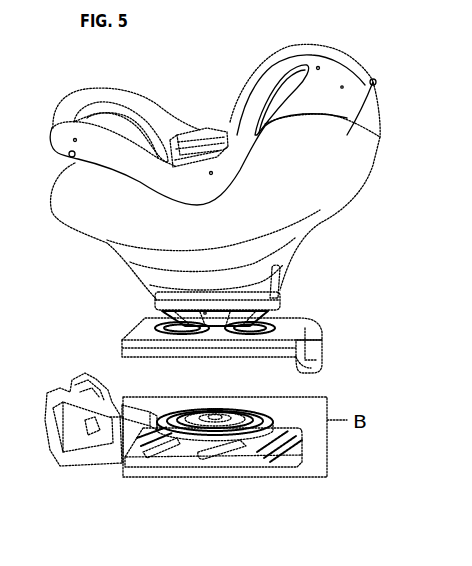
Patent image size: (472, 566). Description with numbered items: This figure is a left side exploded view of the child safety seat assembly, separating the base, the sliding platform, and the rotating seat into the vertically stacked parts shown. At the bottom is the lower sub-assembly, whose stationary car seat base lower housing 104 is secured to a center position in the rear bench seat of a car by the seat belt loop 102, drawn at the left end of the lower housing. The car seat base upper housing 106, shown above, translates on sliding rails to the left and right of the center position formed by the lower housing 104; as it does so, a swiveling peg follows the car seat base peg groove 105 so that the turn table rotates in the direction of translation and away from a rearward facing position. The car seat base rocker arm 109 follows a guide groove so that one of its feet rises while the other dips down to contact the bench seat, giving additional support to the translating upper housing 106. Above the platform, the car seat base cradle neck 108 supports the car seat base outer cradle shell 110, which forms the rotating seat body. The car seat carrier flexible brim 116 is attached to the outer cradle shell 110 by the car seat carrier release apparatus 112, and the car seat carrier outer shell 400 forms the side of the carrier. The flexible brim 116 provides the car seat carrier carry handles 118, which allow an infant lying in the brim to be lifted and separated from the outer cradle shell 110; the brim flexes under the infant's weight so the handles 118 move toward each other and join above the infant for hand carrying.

The seat belt loop 102 is at (72, 442).
The car seat base lower housing 104 is at (157, 460).
The car seat base peg groove 105 is at (210, 458).
The car seat base upper housing 106 is at (277, 336).
The car seat base cradle neck 108 is at (216, 293).
The car seat base rocker arm 109 is at (145, 412).
The car seat base outer cradle shell 110 is at (211, 229).
The car seat carrier release apparatus 112 is at (72, 154).
The car seat carrier flexible brim 116 is at (330, 57).
The car seat carrier carry handles 118 is at (207, 135).
The car seat carrier outer shell 400 is at (327, 110).